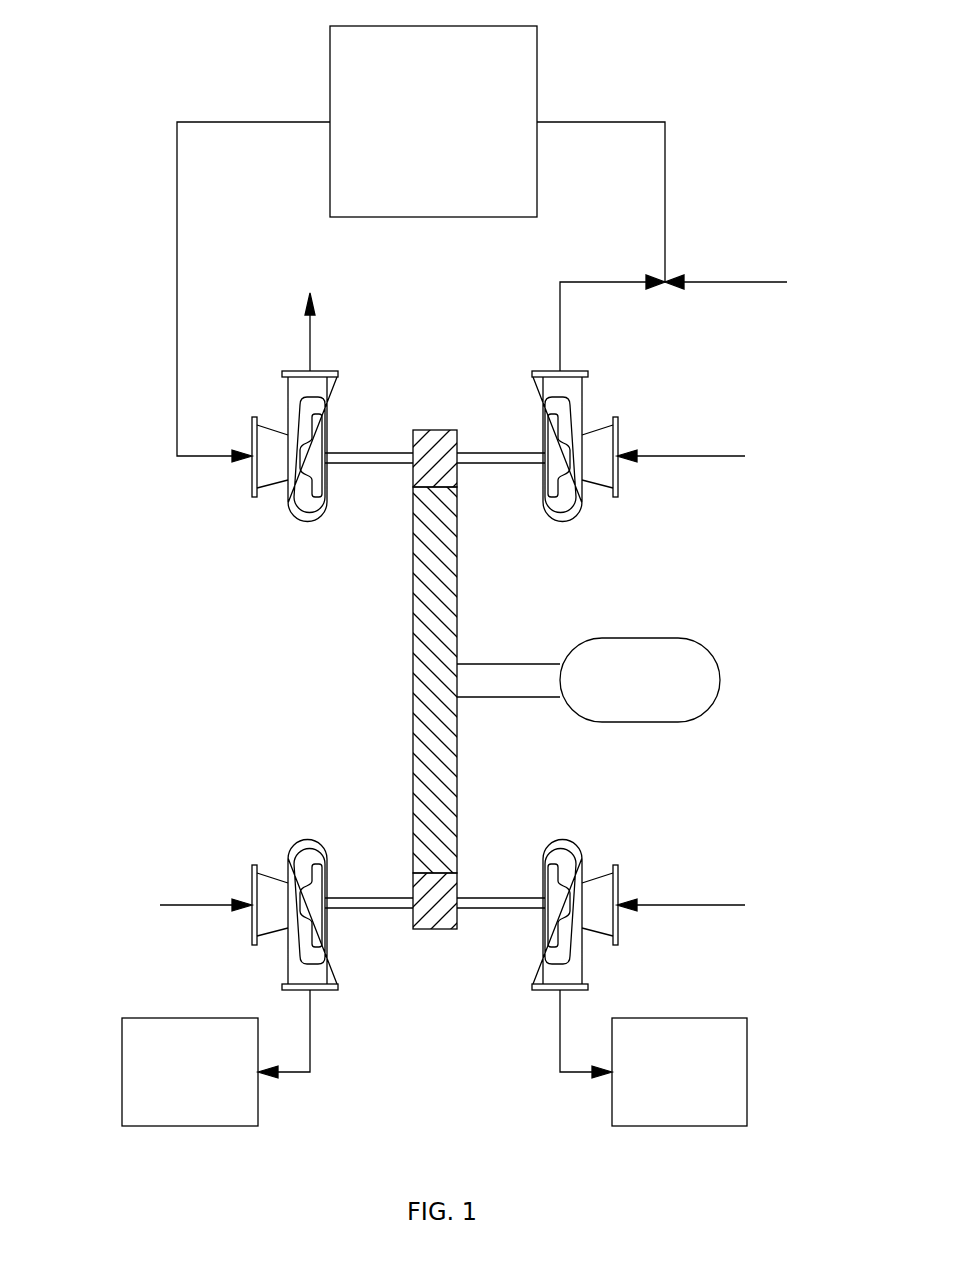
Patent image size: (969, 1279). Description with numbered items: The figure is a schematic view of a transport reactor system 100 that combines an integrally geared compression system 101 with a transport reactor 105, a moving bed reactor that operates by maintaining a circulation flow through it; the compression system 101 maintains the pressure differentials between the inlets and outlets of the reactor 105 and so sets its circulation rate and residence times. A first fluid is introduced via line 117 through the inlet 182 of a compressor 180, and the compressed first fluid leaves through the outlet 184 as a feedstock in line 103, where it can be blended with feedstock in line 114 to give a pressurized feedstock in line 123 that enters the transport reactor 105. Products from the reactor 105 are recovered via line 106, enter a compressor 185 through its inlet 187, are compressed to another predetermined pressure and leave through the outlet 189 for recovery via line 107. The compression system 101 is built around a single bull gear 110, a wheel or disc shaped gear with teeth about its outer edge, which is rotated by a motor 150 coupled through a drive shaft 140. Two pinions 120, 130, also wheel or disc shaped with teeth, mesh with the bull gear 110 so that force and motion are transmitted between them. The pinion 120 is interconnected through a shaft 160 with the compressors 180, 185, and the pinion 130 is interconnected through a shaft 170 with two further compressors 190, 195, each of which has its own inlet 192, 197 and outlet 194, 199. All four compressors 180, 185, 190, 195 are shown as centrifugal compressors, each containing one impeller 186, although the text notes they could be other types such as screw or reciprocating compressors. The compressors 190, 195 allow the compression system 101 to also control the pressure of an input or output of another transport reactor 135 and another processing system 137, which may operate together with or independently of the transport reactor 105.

The transport reactor system 100 is at (186, 42).
The integrally geared compression system 101 is at (224, 688).
The line 103 is at (606, 282).
The transport reactor 105 is at (452, 126).
The line 106 is at (177, 289).
The line 107 is at (315, 314).
The bull gear 110 is at (413, 650).
The line 114 is at (744, 282).
The line 117 is at (700, 456).
The pinion 120 is at (428, 430).
The line 123 is at (622, 122).
The pinion 130 is at (434, 929).
The transport reactor 135 is at (210, 1085).
The processing system 137 is at (700, 1085).
The drive shaft 140 is at (494, 697).
The motor 150 is at (660, 692).
The shaft 160 is at (363, 453).
The shaft 170 is at (494, 898).
The compressor 180 is at (561, 522).
The inlet 182 is at (618, 487).
The outlet 184 is at (573, 371).
The compressor 185 is at (307, 522).
The impeller 186 is at (315, 473).
The inlet 187 is at (252, 487).
The outlet 189 is at (297, 371).
The compressor 190 is at (308, 840).
The inlet 192 is at (252, 878).
The outlet 194 is at (328, 990).
The compressor 195 is at (561, 840).
The inlet 197 is at (618, 878).
The outlet 199 is at (542, 990).